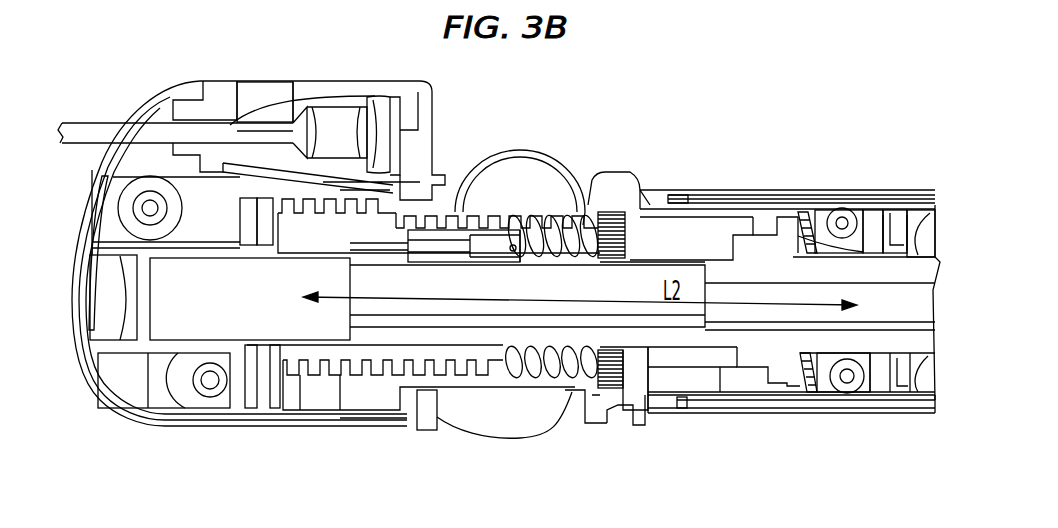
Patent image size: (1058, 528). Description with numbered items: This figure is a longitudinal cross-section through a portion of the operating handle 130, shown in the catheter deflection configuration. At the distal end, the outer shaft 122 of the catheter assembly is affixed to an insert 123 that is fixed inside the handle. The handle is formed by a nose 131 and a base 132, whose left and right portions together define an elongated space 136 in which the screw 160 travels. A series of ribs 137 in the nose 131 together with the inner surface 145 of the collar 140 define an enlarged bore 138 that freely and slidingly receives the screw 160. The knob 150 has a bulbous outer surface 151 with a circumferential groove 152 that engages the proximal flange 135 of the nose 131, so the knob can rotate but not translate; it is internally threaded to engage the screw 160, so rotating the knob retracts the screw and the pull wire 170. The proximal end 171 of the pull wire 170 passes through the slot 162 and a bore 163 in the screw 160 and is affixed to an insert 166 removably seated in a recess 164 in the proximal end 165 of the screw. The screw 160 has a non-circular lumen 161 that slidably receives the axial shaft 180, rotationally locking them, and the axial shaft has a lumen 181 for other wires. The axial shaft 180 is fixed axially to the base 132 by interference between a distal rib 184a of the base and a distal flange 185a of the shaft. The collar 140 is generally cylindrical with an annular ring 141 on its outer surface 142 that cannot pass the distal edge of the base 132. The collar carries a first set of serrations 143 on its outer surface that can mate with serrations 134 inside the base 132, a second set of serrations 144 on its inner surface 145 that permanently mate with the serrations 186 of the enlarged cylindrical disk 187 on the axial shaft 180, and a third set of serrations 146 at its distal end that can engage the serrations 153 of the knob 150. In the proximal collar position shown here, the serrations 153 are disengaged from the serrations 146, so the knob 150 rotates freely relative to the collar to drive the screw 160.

The outer shaft 122 is at (102, 126).
The insert 123 is at (258, 81).
The operating handle 130 is at (851, 126).
The nose 131 is at (172, 81).
The base 132 is at (790, 190).
The serrations 134 is at (822, 392).
The proximal flange 135 is at (425, 405).
The elongated space 136 is at (630, 243).
The ribs 137 is at (283, 400).
The enlarged bore 138 is at (193, 312).
The collar 140 is at (739, 215).
The annular ring 141 is at (613, 172).
The outer surface 142 is at (654, 190).
The first set of serrations 143 is at (792, 378).
The second set of serrations 144 is at (772, 365).
The inner surface 145 is at (700, 364).
The third set of serrations 146 is at (617, 390).
The knob 150 is at (553, 163).
The bulbous outer surface 151 is at (512, 380).
The circumferential groove 152 is at (430, 195).
The serrations 153 is at (585, 392).
The screw 160 is at (460, 365).
The non-circular lumen 161 is at (320, 350).
The slot 162 is at (325, 235).
The bore 163 is at (457, 242).
The recess 164 is at (483, 240).
The proximal end 165 is at (522, 378).
The insert 166 is at (505, 245).
The pull wire 170 is at (277, 242).
The proximal end 171 is at (520, 240).
The axial shaft 180 is at (637, 340).
The lumen 181 is at (872, 310).
The distal rib 184a is at (870, 222).
The distal flange 185a is at (898, 222).
The serrations 186 is at (753, 228).
The enlarged cylindrical disk 187 is at (747, 355).